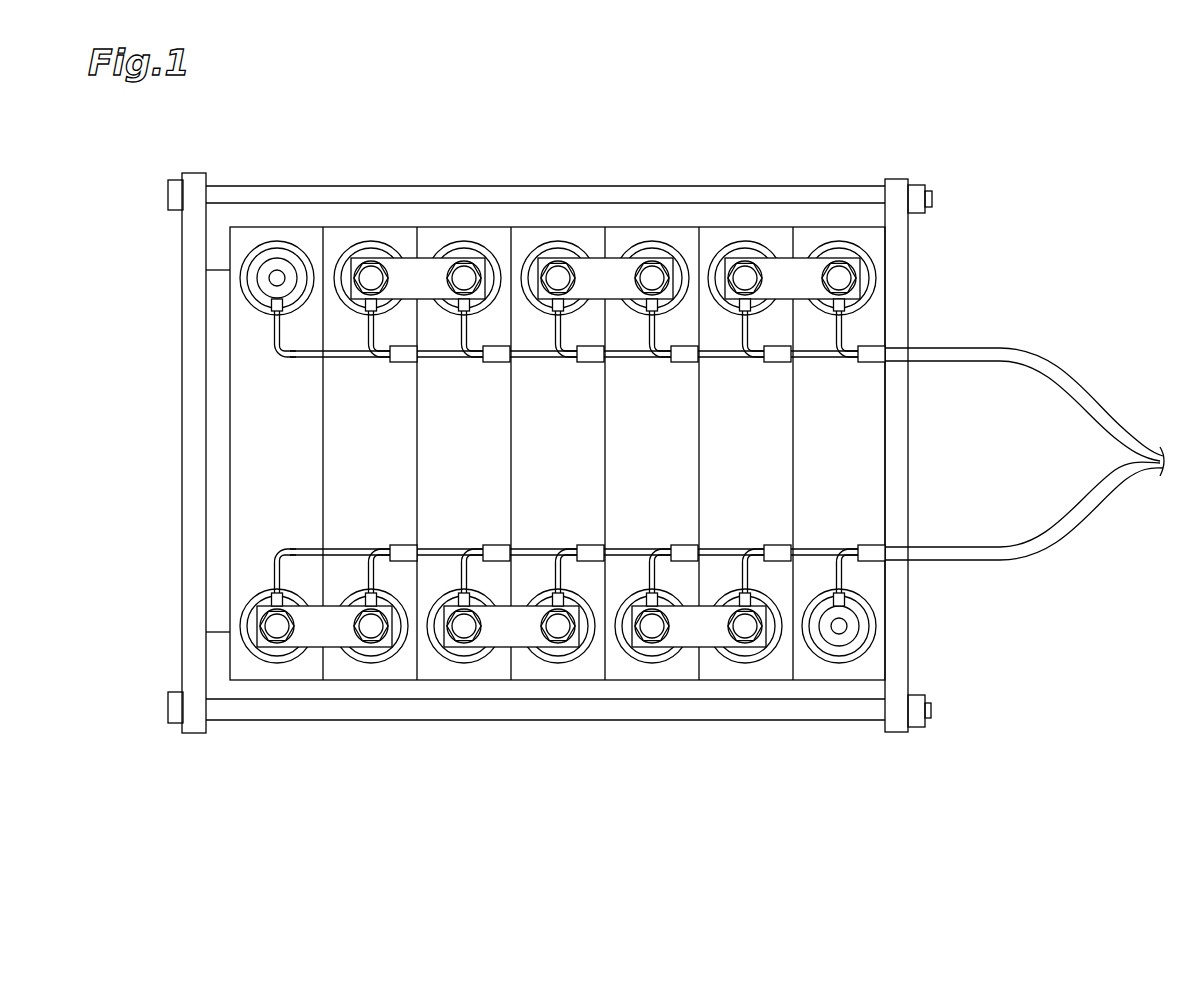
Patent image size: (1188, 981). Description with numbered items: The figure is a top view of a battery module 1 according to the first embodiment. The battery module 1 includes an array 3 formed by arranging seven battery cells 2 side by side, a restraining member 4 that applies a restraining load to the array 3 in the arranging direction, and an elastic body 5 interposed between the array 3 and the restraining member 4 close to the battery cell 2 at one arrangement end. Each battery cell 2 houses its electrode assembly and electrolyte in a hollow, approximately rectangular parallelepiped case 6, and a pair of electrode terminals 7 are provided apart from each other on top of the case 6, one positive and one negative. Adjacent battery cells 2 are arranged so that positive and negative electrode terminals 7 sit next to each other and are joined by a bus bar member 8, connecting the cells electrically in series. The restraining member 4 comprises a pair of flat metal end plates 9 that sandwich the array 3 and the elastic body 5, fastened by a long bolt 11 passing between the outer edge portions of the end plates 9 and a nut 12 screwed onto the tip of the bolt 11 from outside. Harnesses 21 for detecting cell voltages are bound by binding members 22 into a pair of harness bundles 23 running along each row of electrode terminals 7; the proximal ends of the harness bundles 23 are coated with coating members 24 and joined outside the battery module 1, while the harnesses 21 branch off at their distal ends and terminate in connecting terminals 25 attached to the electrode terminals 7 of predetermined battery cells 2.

The battery module 1 is at (188, 156).
The battery cell 2 is at (400, 238).
The array 3 is at (286, 682).
The restraining member 4 is at (880, 160).
The elastic body 5 is at (215, 503).
The case 6 is at (377, 681).
The electrode terminal 7 is at (351, 265).
The bus bar member 8 is at (430, 262).
The end plate 9 is at (188, 403).
The bolt 11 is at (247, 187).
The nut 12 is at (915, 185).
The harness 21 is at (367, 333).
The binding member 22 is at (403, 363).
The harness bundle 23 is at (550, 370).
The coating member 24 is at (1062, 396).
The connecting terminal 25 is at (369, 262).